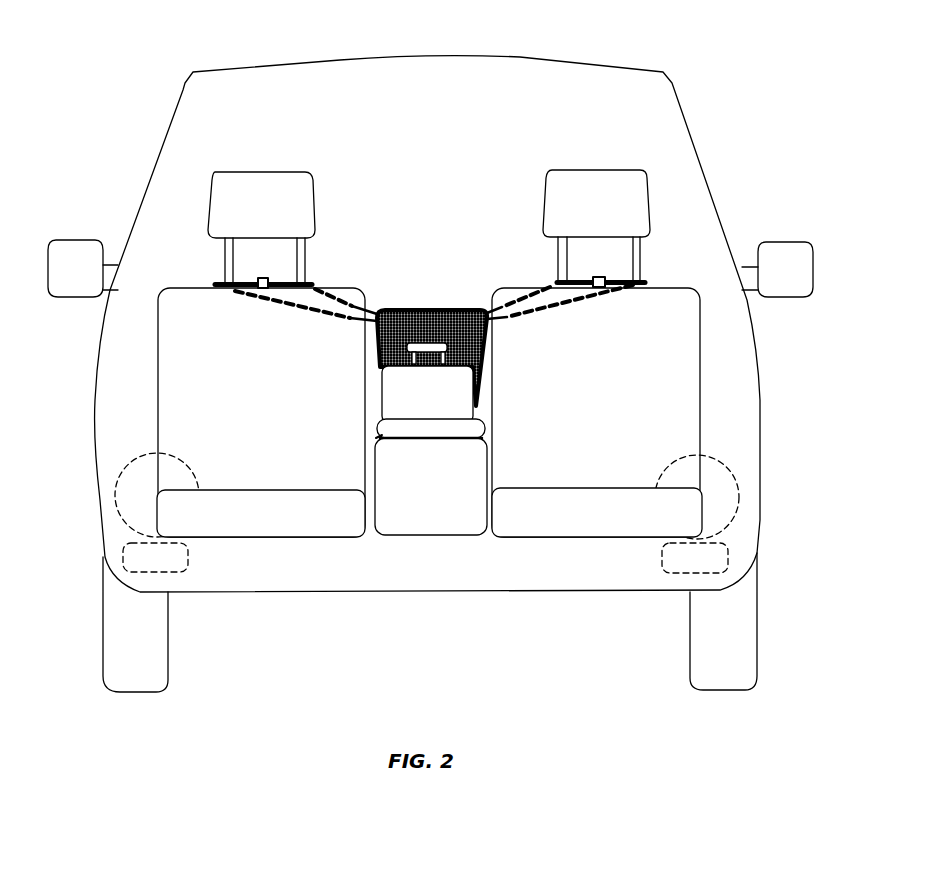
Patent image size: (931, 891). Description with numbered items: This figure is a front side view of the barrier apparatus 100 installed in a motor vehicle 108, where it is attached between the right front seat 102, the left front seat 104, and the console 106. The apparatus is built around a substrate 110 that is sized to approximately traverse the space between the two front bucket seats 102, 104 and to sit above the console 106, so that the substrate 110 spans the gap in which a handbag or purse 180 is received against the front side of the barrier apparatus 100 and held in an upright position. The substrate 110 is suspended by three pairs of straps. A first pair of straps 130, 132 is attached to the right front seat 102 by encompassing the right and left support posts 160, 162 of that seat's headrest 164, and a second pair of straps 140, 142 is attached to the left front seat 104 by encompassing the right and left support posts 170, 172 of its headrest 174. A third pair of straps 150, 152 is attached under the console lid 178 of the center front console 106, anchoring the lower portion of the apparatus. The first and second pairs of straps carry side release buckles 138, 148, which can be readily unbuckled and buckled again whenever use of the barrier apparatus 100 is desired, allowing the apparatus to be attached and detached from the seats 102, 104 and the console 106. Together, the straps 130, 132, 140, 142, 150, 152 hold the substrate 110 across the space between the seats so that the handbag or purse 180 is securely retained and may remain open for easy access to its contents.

The barrier apparatus 100 is at (398, 325).
The right front seat 102 is at (160, 430).
The left front seat 104 is at (700, 432).
The console 106 is at (487, 537).
The motor vehicle 108 is at (305, 60).
The substrate 110 is at (455, 300).
The first strap 130 is at (300, 308).
The first strap 132 is at (318, 287).
The side release buckle 138 is at (238, 291).
The second strap 140 is at (530, 297).
The second strap 142 is at (610, 303).
The side release buckle 148 is at (637, 288).
The third strap 150 is at (376, 438).
The third strap 152 is at (485, 440).
The right support post 160 is at (223, 263).
The left support post 162 is at (307, 263).
The headrest 164 is at (210, 208).
The right support post 170 is at (558, 263).
The left support post 172 is at (640, 260).
The headrest 174 is at (648, 207).
The console lid 178 is at (488, 425).
The handbag or purse 180 is at (378, 393).